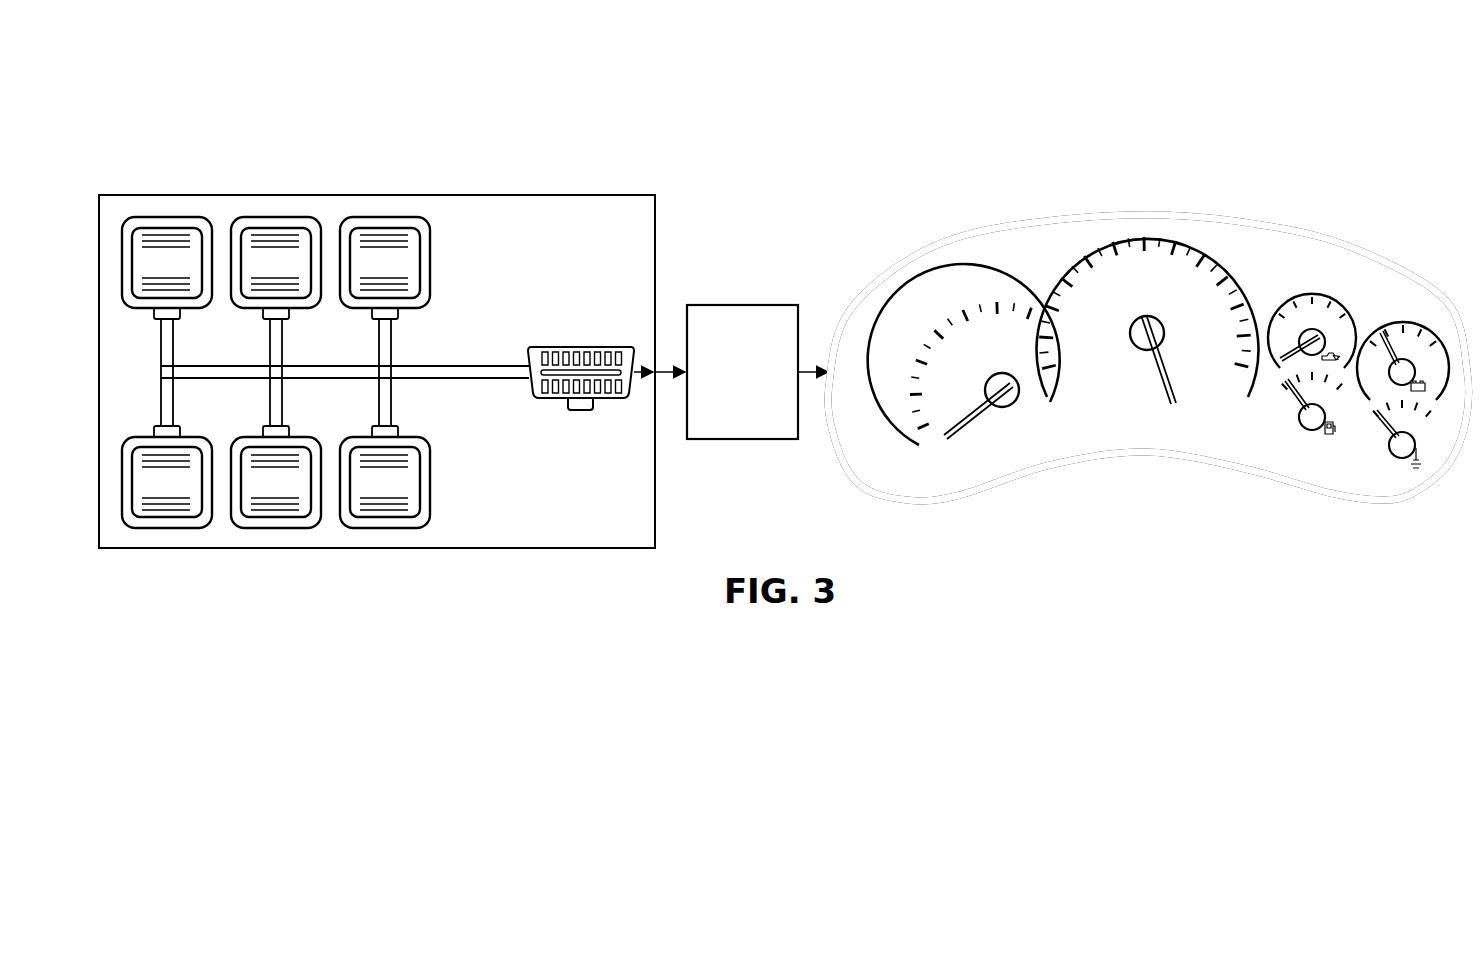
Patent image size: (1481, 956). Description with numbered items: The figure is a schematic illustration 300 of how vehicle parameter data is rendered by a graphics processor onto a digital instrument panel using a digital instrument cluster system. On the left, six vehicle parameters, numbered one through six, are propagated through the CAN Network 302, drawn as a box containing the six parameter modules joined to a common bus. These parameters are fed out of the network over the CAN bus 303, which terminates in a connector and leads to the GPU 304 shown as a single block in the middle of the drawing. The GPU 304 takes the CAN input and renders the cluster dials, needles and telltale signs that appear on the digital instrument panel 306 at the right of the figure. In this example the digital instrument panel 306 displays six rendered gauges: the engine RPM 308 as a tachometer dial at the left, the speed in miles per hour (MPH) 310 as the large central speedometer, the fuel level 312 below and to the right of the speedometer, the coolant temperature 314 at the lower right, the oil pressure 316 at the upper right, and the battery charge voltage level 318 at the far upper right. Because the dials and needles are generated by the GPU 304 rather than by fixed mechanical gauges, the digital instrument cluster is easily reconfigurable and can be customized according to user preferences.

The schematic illustration 300 is at (675, 100).
The CAN Network 302 is at (309, 193).
The CAN bus 303 is at (455, 380).
The GPU 304 is at (742, 305).
The digital instrument panel 306 is at (1209, 214).
The engine RPM 308 is at (1006, 440).
The speed in miles per hour (MPH) 310 is at (1110, 378).
The fuel level 312 is at (1298, 443).
The coolant temperature 314 is at (1406, 463).
The oil pressure 316 is at (1277, 298).
The battery charge voltage level 318 is at (1424, 322).